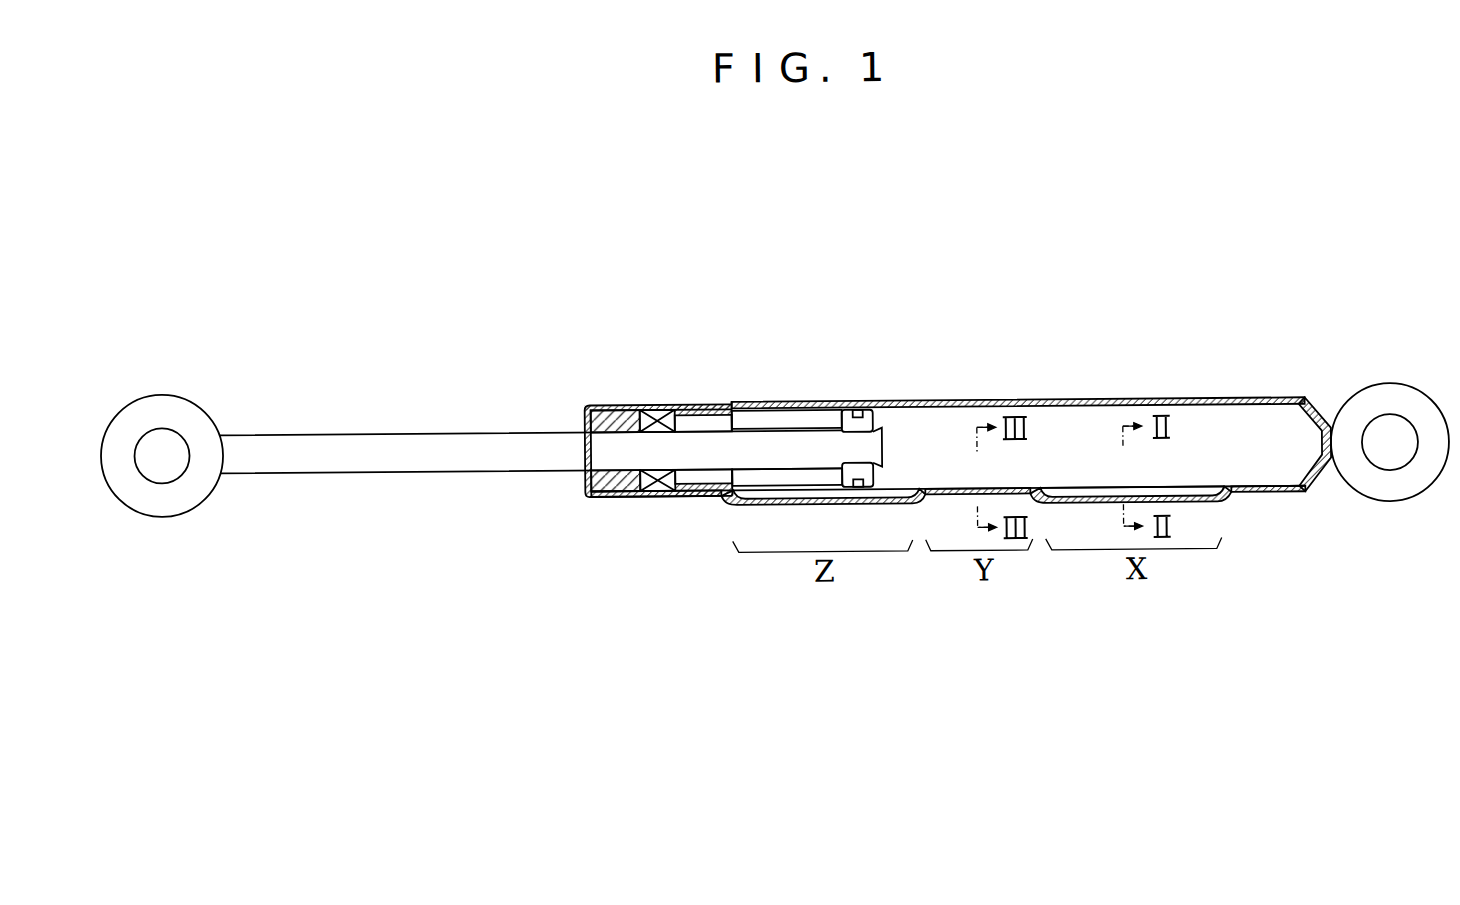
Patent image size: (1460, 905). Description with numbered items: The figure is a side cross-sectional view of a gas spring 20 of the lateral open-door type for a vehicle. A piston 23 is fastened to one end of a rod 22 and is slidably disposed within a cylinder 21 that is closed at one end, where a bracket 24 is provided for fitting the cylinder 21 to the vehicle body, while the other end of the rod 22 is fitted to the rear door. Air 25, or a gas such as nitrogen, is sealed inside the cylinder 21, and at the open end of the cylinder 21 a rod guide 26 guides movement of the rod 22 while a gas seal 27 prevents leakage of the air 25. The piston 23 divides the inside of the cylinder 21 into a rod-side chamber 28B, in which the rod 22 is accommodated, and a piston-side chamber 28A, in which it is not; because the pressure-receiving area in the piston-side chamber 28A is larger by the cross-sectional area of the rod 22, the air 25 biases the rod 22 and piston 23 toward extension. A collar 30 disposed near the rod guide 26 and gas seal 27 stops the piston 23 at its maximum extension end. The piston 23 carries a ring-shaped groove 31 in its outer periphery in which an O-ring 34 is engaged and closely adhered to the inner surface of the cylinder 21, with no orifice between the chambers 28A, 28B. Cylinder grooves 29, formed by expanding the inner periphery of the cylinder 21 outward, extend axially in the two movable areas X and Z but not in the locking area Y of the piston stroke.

The gas spring 20 is at (590, 210).
The cylinder 21 is at (1278, 401).
The rod 22 is at (402, 429).
The piston 23 is at (875, 416).
The bracket 24 is at (1380, 386).
The air 25 is at (1273, 476).
The rod guide 26 is at (612, 406).
The gas seal 27 is at (656, 490).
The piston-side chamber 28A is at (1183, 424).
The rod-side chamber 28B is at (802, 418).
The cylinder grooves 29 is at (903, 493).
The collar 30 is at (698, 406).
The ring-shaped groove 31 is at (857, 489).
The O-ring 34 is at (863, 408).